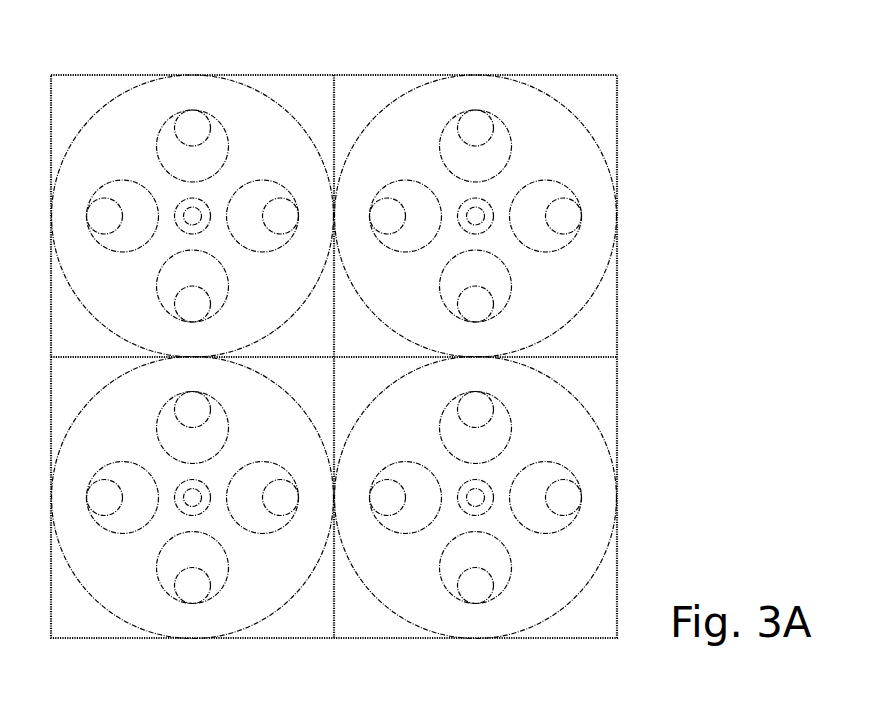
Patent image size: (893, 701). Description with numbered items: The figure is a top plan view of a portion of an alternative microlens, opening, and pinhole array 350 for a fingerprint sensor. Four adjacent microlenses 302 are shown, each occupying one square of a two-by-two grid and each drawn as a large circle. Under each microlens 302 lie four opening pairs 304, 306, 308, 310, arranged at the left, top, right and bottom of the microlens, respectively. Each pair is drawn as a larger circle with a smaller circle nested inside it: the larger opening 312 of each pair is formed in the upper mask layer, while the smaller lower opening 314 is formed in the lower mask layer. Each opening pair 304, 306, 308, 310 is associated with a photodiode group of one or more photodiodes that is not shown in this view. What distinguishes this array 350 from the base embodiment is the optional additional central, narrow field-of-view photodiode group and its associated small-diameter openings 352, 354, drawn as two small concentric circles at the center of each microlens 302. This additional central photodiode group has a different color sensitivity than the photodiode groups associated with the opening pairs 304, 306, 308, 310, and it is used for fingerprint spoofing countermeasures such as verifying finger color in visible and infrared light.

The microlens 302 is at (205, 90).
The opening pair 304 is at (406, 167).
The opening pair 306 is at (515, 112).
The opening pair 308 is at (561, 175).
The opening pair 310 is at (525, 294).
The larger opening 312 is at (542, 233).
The emitter inner aperture 314 is at (562, 215).
The microlens, opening, and pinhole array 350 is at (680, 83).
The small-diameter opening 352 is at (473, 197).
The small-diameter opening 354 is at (480, 220).